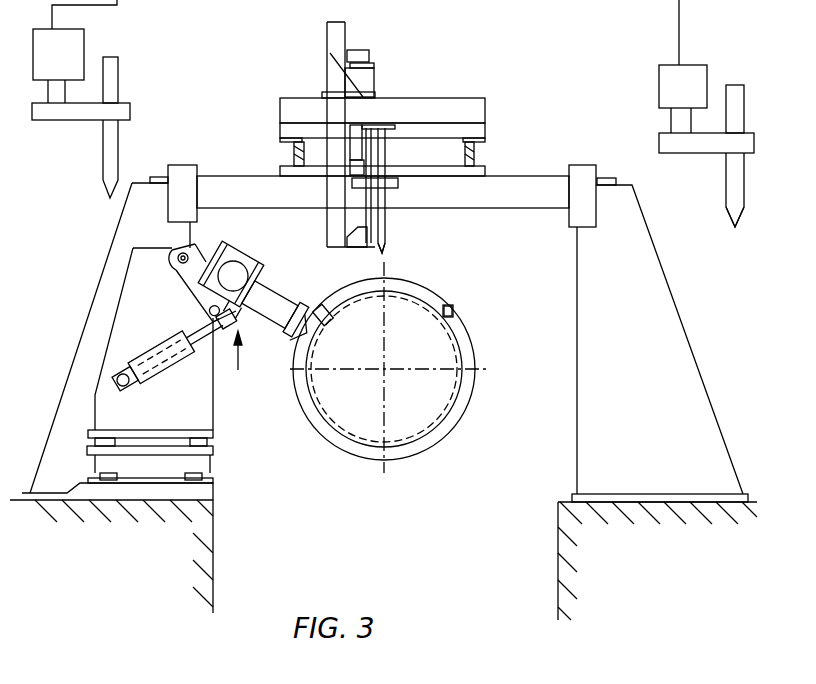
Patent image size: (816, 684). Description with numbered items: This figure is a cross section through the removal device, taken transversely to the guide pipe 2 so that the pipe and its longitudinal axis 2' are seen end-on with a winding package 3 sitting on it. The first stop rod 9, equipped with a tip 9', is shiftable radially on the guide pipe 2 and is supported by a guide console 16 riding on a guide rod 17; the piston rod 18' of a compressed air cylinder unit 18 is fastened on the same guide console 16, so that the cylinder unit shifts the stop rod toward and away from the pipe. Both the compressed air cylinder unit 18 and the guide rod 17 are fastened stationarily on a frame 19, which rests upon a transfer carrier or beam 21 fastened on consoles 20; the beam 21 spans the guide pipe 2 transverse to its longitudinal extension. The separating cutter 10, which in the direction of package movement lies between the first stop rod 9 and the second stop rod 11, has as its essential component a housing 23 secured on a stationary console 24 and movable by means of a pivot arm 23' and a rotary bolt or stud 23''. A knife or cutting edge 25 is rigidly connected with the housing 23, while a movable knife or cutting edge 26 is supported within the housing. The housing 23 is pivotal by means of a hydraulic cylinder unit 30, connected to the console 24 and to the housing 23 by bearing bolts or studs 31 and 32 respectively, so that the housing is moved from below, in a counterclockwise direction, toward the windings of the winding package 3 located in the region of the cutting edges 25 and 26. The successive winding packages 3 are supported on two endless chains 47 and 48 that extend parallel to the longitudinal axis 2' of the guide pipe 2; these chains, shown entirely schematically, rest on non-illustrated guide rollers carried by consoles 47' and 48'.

The guide pipe 2 is at (384, 410).
The longitudinal axis 2' is at (390, 367).
The winding packages 3 is at (477, 398).
The first stop rod 9 is at (423, 144).
The tip 9' is at (417, 262).
The separating cutter 10 is at (240, 369).
The second stop rod 11 is at (733, 185).
The guide console 16 is at (80, 110).
The guide rod 17 is at (372, 217).
The compressed air cylinder unit 18 is at (370, 123).
The piston rod 18' is at (297, 193).
The frame 19 is at (464, 110).
The consoles 20 is at (102, 318).
The transfer carrier or beam 21 is at (529, 190).
The housing 23 is at (230, 271).
The pivot arm 23' is at (170, 229).
The rotary bolt or stud 23'' is at (115, 248).
The stationary console 24 is at (200, 416).
The knife or cutting edge 25 is at (290, 323).
The movable knife or cutting edge 26 is at (297, 315).
The hydraulic cylinder unit 30 is at (222, 333).
The bearing bolt or stud 31 is at (122, 378).
The bearing bolt or stud 32 is at (228, 321).
The endless chain 47 is at (348, 320).
The console 47' is at (384, 369).
The endless chain 48 is at (482, 288).
The console 48' is at (494, 321).